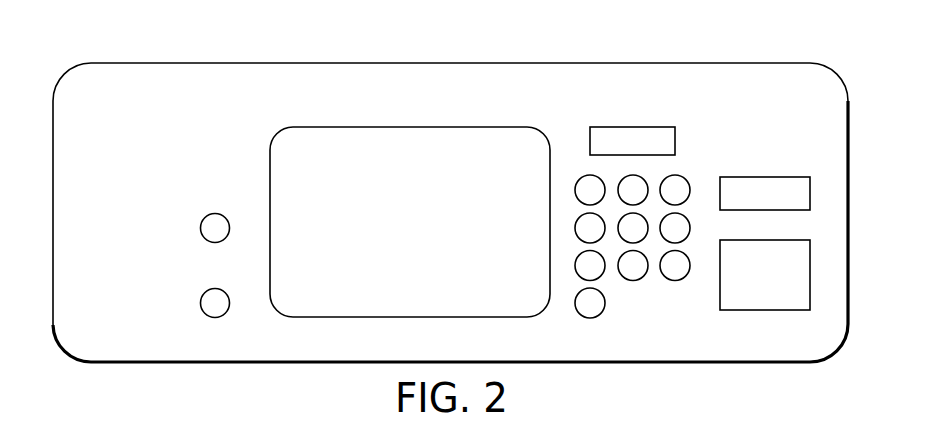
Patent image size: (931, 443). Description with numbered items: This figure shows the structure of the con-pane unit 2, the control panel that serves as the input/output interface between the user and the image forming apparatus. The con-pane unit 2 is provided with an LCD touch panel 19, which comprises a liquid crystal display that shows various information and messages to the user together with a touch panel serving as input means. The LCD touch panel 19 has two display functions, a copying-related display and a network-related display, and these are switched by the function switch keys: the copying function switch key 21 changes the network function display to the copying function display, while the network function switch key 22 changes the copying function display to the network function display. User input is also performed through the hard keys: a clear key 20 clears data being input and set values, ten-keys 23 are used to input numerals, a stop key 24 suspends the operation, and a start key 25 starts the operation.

The con-pane unit 2 is at (362, 55).
The LCD touch panel 19 is at (388, 137).
The clear key 20 is at (633, 97).
The copying function switch key 21 is at (200, 229).
The network function switch key 22 is at (200, 304).
The ten-keys 23 is at (623, 303).
The stop key 24 is at (790, 176).
The start key 25 is at (773, 311).